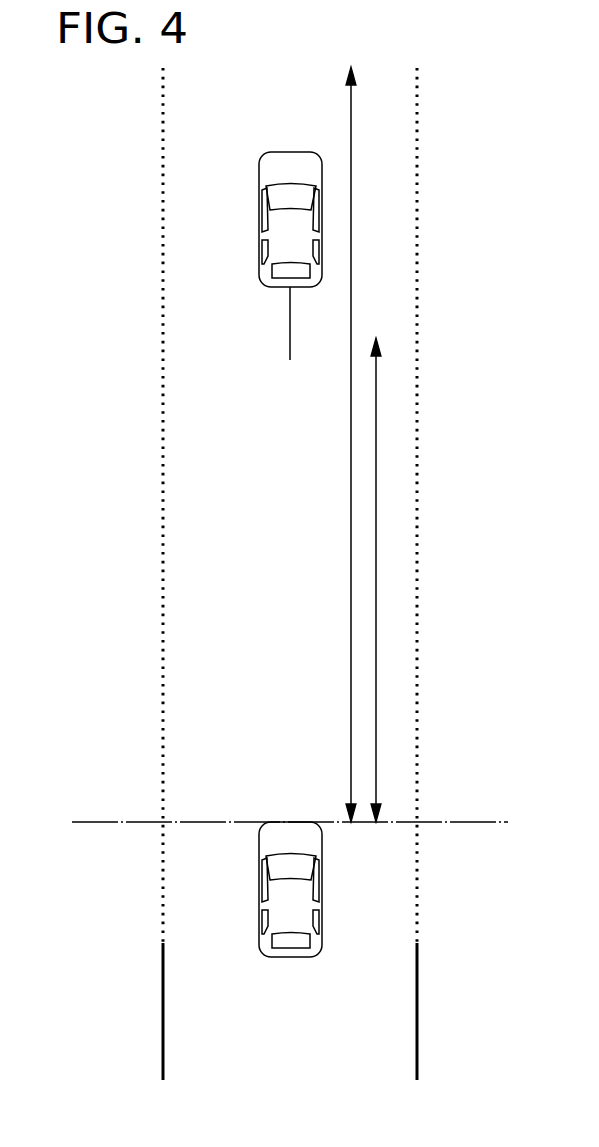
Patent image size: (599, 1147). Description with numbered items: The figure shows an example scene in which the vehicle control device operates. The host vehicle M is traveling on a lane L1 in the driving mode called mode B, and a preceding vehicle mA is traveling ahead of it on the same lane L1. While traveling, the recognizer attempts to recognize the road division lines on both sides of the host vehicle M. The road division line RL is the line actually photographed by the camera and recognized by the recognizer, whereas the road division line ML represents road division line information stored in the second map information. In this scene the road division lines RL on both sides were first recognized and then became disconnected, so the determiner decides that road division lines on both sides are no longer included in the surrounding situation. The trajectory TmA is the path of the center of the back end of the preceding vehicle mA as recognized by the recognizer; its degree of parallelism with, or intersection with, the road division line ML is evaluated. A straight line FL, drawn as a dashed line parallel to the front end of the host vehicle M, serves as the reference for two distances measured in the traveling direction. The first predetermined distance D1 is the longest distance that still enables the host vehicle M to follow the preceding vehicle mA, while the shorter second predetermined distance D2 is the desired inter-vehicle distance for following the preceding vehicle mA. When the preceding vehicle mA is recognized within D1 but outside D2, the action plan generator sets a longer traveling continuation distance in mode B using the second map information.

The preceding vehicle mA is at (260, 218).
The trajectory of the preceding vehicle TmA is at (290, 318).
The first predetermined distance D1 is at (352, 294).
The second predetermined distance D2 is at (377, 578).
The straight line FL is at (484, 822).
The road division line in the second map information ML is at (420, 887).
The road division line RL is at (419, 1008).
The host vehicle M is at (260, 883).
The lane L1 is at (304, 1060).